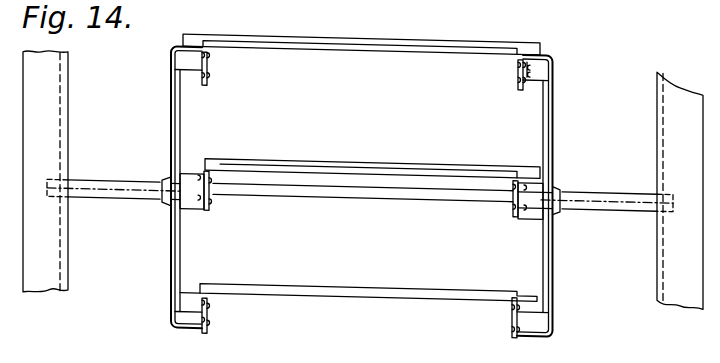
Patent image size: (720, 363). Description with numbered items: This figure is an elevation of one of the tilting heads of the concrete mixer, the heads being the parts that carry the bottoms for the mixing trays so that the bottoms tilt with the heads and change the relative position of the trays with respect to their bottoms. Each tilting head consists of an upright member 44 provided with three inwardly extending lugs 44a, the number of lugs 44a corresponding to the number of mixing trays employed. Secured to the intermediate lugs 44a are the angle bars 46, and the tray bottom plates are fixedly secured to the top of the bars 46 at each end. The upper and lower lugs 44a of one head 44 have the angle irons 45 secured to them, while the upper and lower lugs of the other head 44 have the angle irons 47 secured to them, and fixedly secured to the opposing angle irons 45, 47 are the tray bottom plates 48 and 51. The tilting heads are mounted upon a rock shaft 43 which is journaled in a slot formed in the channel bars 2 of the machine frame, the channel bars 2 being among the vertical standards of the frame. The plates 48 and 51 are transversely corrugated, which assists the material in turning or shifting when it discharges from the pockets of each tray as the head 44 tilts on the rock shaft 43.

The channel bar 2 is at (55, 243).
The rock shaft 43 is at (487, 203).
The upright member 44 is at (554, 126).
The inwardly extending lug 44a is at (530, 92).
The angle iron 45 is at (212, 70).
The angle bar 46 is at (208, 208).
The angle iron 47 is at (516, 69).
The tray bottom plate 48 is at (386, 39).
The tray bottom plate 51 is at (338, 292).